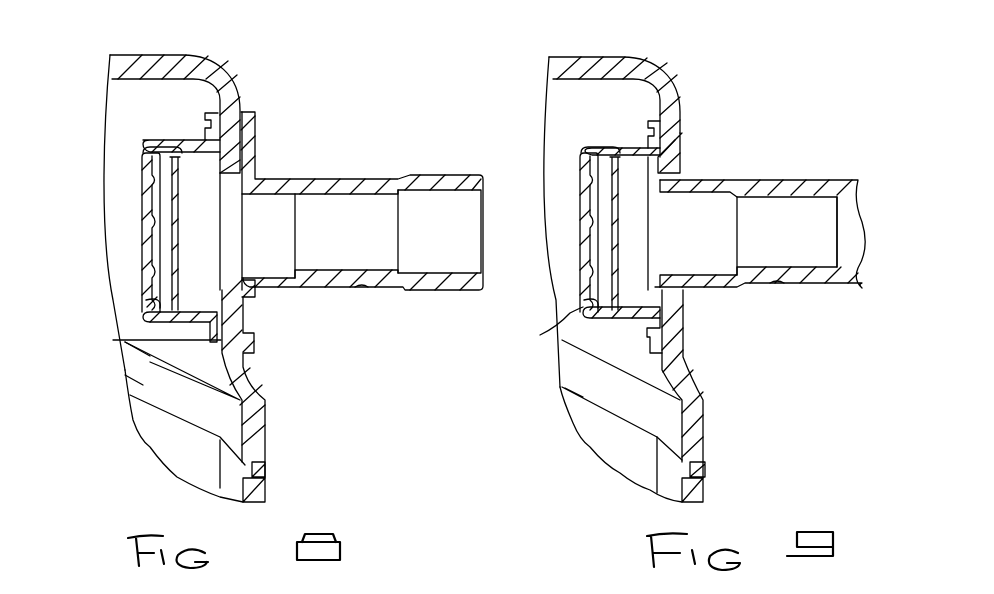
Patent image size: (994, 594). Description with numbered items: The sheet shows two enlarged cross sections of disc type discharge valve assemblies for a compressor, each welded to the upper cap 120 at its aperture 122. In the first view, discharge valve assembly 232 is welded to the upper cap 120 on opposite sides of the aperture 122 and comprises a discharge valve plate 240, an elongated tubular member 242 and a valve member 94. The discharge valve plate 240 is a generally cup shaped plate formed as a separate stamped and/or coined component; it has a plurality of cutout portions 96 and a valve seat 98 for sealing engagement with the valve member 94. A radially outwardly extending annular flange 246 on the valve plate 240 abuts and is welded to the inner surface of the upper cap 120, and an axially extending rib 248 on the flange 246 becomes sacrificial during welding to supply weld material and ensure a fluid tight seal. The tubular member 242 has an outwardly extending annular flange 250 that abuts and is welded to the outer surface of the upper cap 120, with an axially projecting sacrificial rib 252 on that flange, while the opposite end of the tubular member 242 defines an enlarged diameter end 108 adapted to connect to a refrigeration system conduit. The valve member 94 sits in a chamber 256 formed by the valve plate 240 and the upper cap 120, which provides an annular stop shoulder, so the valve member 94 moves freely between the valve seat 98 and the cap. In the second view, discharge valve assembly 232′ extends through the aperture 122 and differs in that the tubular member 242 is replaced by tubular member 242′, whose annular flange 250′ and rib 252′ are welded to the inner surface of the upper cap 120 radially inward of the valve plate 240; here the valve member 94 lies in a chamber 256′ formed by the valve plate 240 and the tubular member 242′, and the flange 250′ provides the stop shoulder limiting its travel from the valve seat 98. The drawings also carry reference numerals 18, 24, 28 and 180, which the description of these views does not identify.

In FIG. 8, the inlet 18 is at (260, 492).
In FIG. 9, the inlet 18 is at (707, 487).
In FIG. 8, the pump housing 24 is at (143, 383).
In FIG. 9, the pump housing 24 is at (587, 390).
In FIG. 8, the chamber 28 is at (169, 119).
In FIG. 9, the chamber 28 is at (623, 113).
In FIG. 8, the valve member 94 is at (172, 273).
In FIG. 9, the valve member 94 is at (620, 273).
In FIG. 8, the cutout portions 96 is at (143, 182).
In FIG. 8, the valve seat 98 is at (160, 308).
In FIG. 8, the enlarged diameter end 108 is at (470, 193).
In FIG. 8, the upper cap 120 is at (173, 57).
In FIG. 9, the upper cap 120 is at (598, 58).
In FIG. 8, the aperture 122 is at (258, 282).
In FIG. 9, the aperture 122 is at (667, 193).
In FIG. 9, the bore 180 is at (852, 193).
In FIG. 8, the discharge valve assembly 232 is at (376, 42).
In FIG. 9, the discharge valve assembly 232′ is at (815, 52).
In FIG. 8, the discharge valve plate 240 is at (143, 223).
In FIG. 9, the discharge valve plate 240 is at (570, 323).
In FIG. 8, the tubular member 242 is at (362, 277).
In FIG. 9, the tubular member 242′ is at (782, 279).
In FIG. 8, the annular flange 246 is at (147, 362).
In FIG. 8, the rib 248 is at (213, 338).
In FIG. 8, the annular flange 250 is at (247, 147).
In FIG. 9, the annular flange 250′ is at (673, 293).
In FIG. 8, the rib 252 is at (249, 340).
In FIG. 9, the rib 252′ is at (682, 140).
In FIG. 8, the chamber 256 is at (200, 167).
In FIG. 9, the chamber 256′ is at (603, 160).